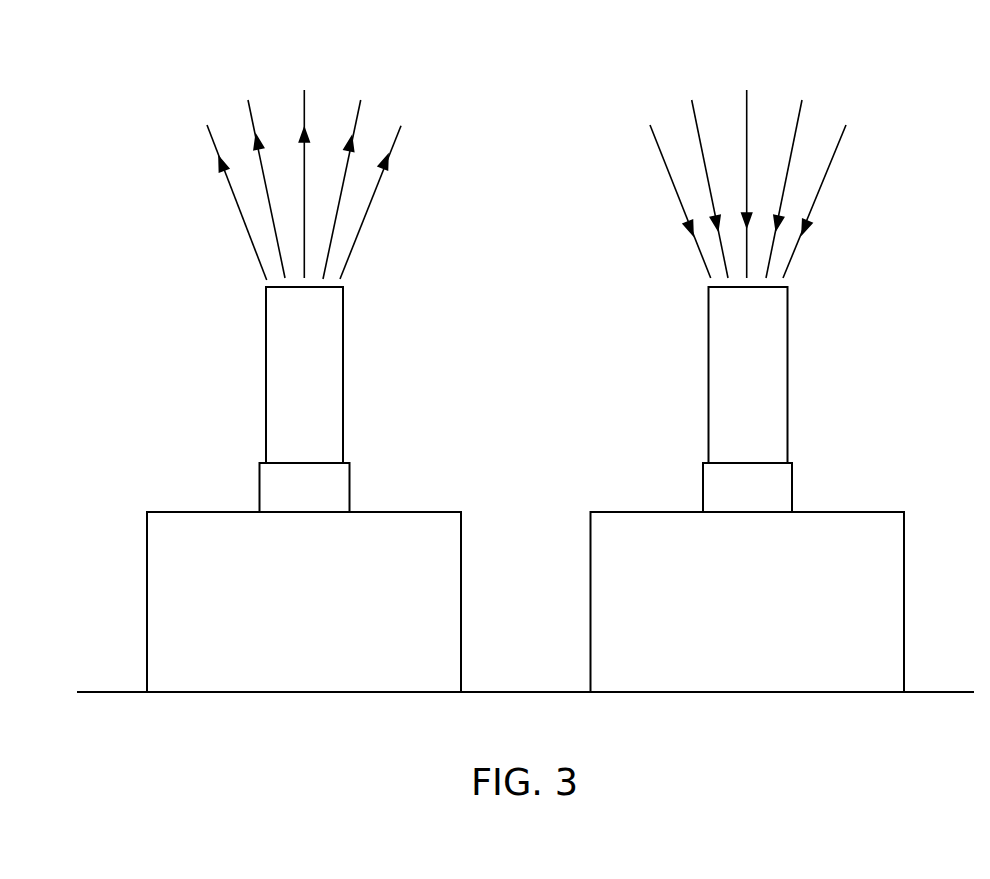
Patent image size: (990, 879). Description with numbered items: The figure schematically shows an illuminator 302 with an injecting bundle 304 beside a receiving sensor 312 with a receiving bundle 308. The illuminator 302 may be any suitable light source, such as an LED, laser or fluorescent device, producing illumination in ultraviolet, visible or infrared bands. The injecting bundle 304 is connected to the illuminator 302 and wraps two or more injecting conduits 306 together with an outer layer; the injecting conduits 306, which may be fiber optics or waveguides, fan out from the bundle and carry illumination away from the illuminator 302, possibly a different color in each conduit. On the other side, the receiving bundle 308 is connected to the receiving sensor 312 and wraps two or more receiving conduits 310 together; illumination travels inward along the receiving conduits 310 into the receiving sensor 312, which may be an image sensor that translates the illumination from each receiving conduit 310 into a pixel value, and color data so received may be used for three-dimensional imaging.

The illuminator 302 is at (147, 622).
The injecting bundle 304 is at (266, 383).
The injecting conduits 306 is at (210, 138).
The receiving bundle 308 is at (787, 383).
The receiving conduits 310 is at (660, 152).
The receiving sensor 312 is at (904, 622).